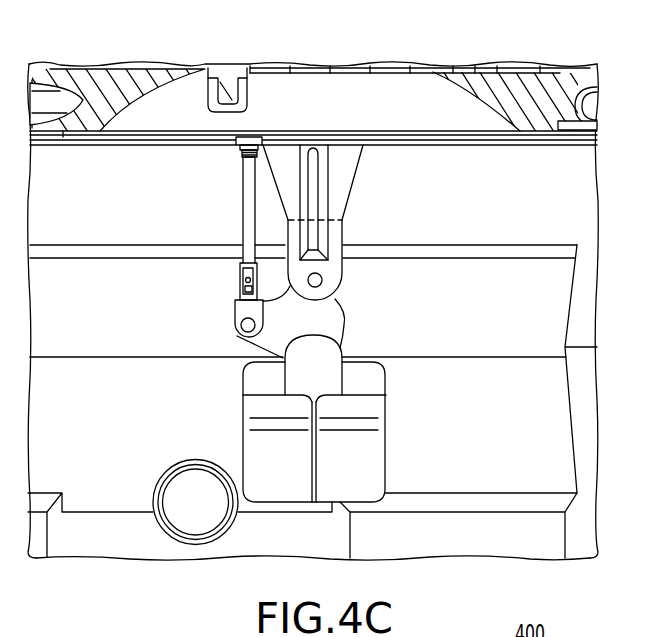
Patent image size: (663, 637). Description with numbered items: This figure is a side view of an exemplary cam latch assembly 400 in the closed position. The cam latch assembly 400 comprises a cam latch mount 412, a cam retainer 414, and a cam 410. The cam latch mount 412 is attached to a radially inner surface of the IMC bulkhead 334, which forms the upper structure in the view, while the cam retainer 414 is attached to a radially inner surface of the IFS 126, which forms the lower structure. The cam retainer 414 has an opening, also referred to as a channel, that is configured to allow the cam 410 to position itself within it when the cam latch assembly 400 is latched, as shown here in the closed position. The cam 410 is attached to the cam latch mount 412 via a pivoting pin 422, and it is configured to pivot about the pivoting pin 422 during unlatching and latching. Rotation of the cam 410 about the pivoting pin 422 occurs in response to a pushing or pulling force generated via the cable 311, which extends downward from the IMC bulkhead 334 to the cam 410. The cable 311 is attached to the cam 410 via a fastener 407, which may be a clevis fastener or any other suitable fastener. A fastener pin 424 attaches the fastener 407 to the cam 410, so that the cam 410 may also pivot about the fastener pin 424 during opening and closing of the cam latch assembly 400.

The cam latch assembly 400 is at (396, 70).
The IMC bulkhead 334 is at (393, 133).
The IFS 126 is at (160, 436).
The cable 311 is at (242, 210).
The cam latch mount 412 is at (349, 197).
The pivoting pin 422 is at (323, 281).
The cam 410 is at (330, 321).
The fastener 407 is at (236, 305).
The fastener pin 424 is at (241, 325).
The cam retainer 414 is at (372, 470).